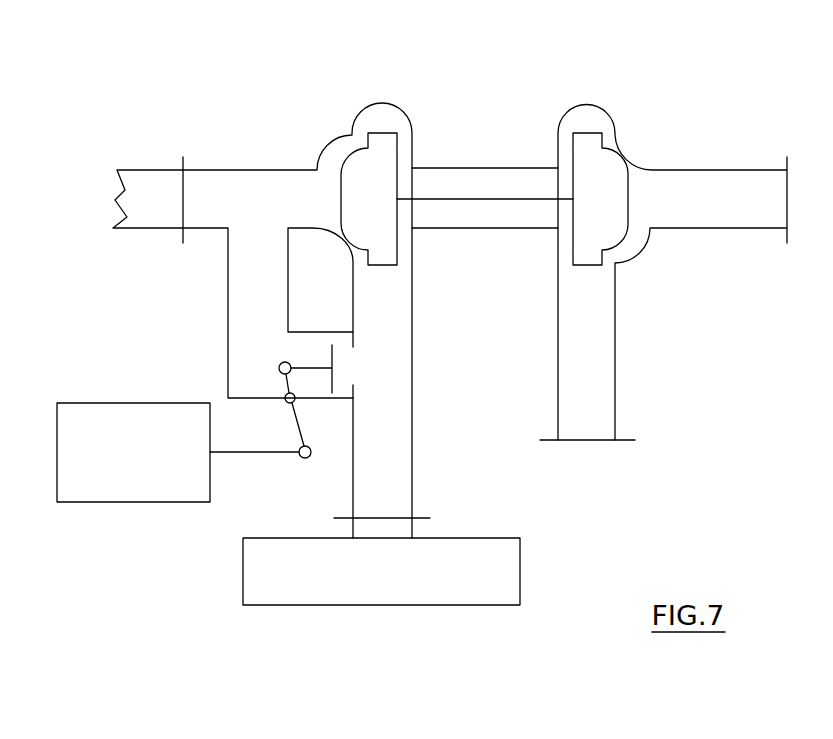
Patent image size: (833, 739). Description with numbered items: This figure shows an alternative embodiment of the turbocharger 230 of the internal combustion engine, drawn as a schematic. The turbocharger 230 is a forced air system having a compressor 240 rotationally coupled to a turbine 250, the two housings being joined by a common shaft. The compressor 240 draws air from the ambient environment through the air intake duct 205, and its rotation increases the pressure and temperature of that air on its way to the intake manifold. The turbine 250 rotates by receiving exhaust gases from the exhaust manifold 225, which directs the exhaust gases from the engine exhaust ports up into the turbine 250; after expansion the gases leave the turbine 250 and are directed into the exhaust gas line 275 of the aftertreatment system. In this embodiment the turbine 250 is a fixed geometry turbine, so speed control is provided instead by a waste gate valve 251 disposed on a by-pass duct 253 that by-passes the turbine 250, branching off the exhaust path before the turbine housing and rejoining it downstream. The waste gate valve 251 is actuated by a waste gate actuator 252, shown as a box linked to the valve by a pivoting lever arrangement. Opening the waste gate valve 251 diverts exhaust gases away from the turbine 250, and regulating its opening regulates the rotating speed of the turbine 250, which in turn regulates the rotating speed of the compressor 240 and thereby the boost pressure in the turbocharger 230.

The turbocharger 230 is at (492, 105).
The exhaust gas line 275 is at (148, 190).
The turbine 250 is at (353, 125).
The compressor 240 is at (619, 130).
The air intake duct 205 is at (600, 375).
The by-pass duct 253 is at (245, 300).
The waste gate valve 251 is at (333, 378).
The waste gate actuator 252 is at (157, 503).
The exhaust manifold 225 is at (400, 587).